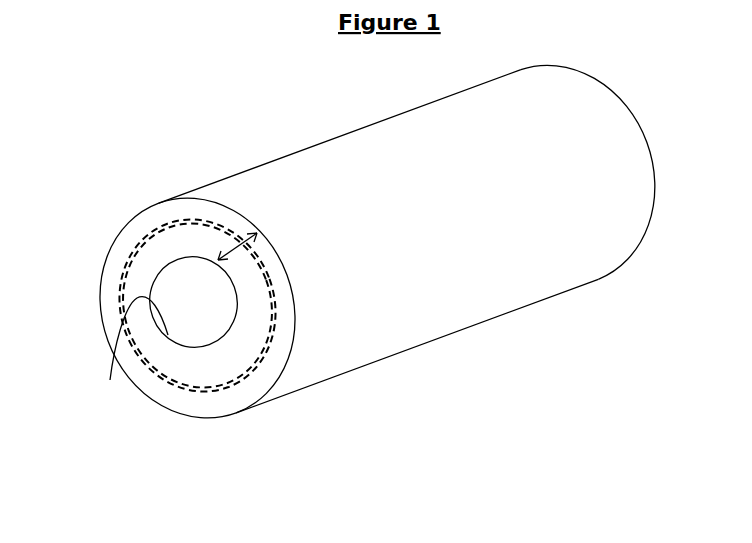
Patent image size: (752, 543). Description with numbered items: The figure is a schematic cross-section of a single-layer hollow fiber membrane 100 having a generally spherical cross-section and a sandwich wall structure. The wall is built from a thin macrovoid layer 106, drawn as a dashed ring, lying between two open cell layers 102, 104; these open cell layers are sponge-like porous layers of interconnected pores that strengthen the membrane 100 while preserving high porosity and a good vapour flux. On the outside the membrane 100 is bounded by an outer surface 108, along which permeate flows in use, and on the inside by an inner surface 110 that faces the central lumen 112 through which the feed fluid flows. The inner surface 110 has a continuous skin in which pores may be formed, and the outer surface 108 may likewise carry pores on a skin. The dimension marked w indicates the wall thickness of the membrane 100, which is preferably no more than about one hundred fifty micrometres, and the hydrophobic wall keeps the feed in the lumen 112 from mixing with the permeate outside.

The hollow fiber membrane 100 is at (478, 370).
The open cell layer 102 is at (150, 223).
The open cell layer 104 is at (253, 300).
The macrovoid layer 106 is at (242, 375).
The outer surface 108 is at (247, 172).
The inner surface 110 is at (110, 380).
The lumen 112 is at (205, 290).